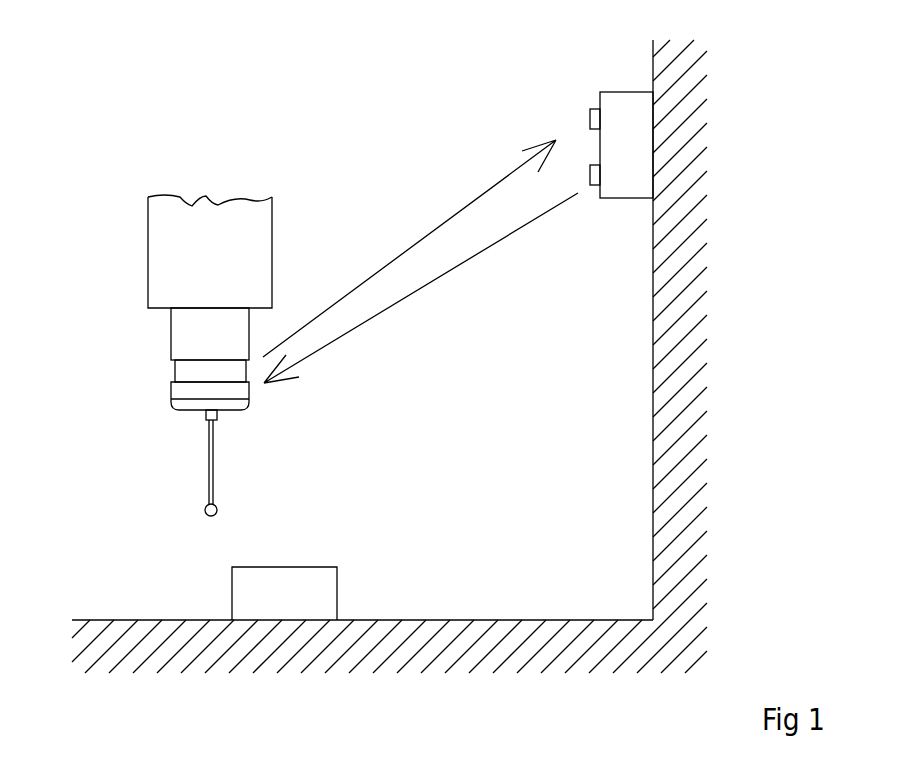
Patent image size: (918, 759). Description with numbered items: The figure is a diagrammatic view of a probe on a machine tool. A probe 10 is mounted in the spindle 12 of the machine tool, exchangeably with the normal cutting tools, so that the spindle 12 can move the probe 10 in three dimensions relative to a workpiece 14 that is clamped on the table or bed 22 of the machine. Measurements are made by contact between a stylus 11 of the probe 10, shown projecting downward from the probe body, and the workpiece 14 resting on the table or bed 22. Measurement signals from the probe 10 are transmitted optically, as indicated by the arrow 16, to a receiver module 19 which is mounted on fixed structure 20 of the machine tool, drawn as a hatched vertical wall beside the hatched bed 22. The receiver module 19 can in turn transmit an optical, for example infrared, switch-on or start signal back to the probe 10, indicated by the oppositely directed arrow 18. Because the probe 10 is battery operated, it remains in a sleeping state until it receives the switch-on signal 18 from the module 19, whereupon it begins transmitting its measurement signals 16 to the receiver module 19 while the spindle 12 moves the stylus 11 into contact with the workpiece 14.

The probe 10 is at (188, 333).
The stylus 11 is at (202, 477).
The spindle 12 is at (160, 235).
The workpiece 14 is at (307, 591).
The arrow indicating optical measurement signals 16 is at (400, 247).
The arrow indicating switch-on signal 18 is at (507, 244).
The receiver module 19 is at (620, 107).
The fixed structure 20 is at (666, 412).
The table or bed 22 is at (520, 632).